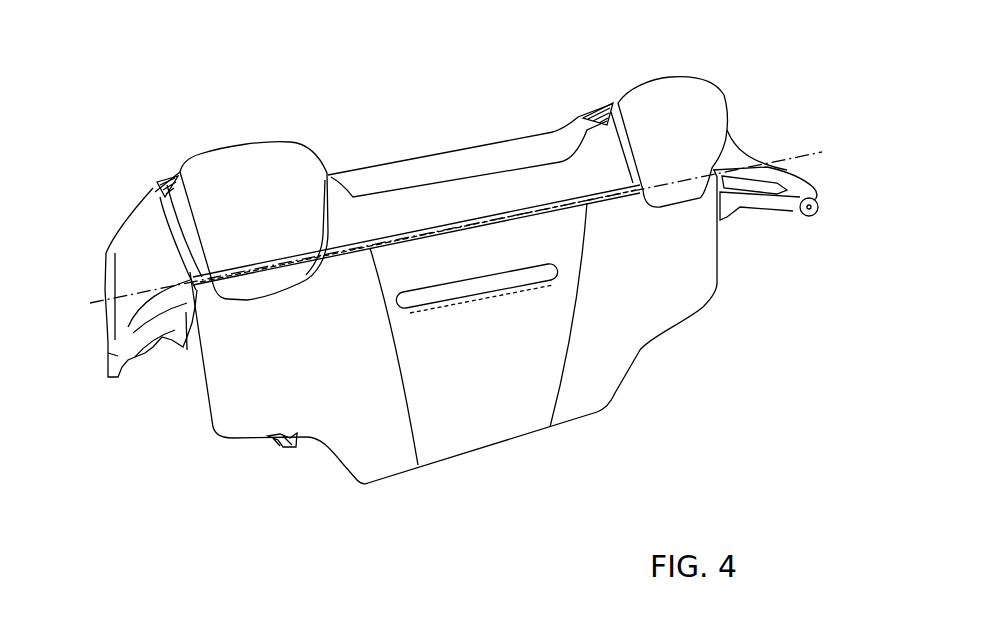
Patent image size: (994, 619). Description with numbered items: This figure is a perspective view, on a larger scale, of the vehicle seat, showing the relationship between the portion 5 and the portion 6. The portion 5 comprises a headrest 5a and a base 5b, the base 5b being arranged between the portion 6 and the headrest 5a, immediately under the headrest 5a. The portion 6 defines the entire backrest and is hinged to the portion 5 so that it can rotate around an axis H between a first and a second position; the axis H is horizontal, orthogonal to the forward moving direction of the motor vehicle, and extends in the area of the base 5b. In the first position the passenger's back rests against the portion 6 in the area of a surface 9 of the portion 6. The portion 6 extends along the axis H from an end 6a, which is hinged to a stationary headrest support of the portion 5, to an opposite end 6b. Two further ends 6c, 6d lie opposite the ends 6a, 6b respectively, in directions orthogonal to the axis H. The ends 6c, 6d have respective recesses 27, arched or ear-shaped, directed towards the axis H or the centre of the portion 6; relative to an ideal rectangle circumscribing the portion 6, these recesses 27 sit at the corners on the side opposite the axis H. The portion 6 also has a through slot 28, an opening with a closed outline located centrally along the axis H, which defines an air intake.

The portion 5 is at (257, 158).
The headrest 5a is at (188, 177).
The base 5b is at (143, 212).
The portion 6 is at (490, 392).
The end 6a is at (233, 405).
The end 6b is at (697, 267).
The end 6c is at (380, 453).
The end 6d is at (607, 380).
The surface 9 is at (386, 400).
The recess 27 is at (660, 333).
The through slot 28 is at (492, 279).
The axis H is at (793, 153).